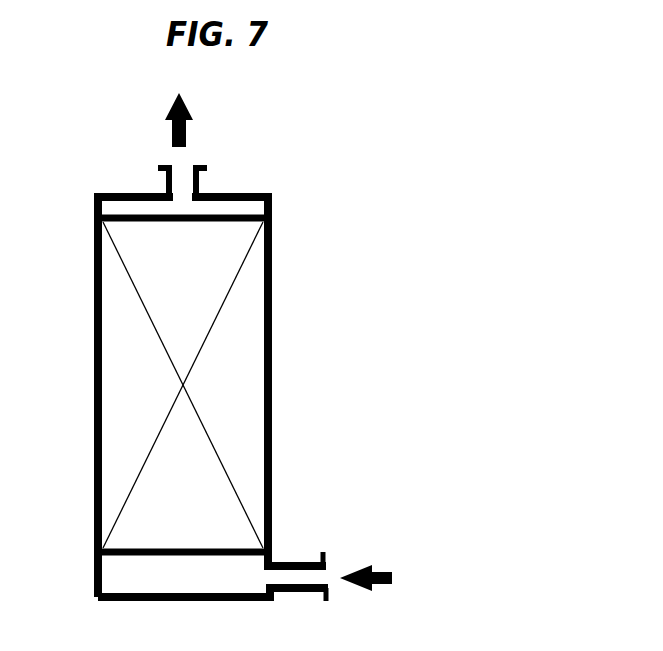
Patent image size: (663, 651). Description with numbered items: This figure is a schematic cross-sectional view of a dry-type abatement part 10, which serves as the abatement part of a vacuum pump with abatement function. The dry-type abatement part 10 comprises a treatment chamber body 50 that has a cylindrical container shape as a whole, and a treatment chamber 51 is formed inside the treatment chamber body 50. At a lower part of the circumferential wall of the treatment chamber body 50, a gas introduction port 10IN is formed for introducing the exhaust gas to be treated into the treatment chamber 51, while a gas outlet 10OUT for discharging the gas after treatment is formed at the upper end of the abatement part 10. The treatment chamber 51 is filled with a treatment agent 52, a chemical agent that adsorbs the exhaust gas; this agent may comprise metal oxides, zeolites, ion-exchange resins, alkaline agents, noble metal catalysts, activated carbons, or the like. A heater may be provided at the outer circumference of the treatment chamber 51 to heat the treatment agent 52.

The dry-type abatement part 10 is at (219, 362).
The gas outlet 10OUT is at (182, 178).
The gas introduction port 10IN is at (322, 578).
The treatment chamber body 50 is at (272, 317).
The treatment chamber 51 is at (115, 205).
The treatment agent 52 is at (243, 380).